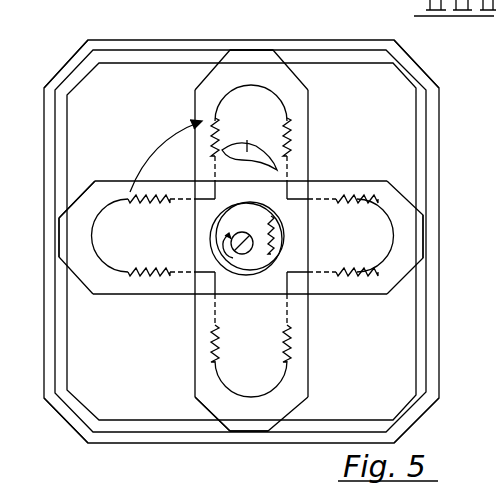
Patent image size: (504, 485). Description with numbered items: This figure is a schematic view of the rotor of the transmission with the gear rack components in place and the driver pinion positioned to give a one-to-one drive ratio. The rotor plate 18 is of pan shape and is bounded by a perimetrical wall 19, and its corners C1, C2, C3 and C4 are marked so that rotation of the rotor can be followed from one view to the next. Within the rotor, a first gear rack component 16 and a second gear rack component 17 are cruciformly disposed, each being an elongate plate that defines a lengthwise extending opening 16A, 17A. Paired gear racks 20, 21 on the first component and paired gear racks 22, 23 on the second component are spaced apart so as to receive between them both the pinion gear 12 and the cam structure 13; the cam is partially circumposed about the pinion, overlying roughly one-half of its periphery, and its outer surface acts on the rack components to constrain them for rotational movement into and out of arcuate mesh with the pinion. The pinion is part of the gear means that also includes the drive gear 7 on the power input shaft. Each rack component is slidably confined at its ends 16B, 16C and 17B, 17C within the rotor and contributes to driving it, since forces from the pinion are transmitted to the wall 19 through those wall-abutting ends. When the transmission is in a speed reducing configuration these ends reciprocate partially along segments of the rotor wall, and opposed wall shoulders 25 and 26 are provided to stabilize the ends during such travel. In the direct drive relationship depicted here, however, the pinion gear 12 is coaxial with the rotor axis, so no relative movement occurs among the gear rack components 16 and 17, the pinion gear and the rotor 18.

The drive gear 7 is at (249, 143).
The pinion gear 12 is at (251, 230).
The cam structure 13 is at (259, 206).
The first gear rack component 16 is at (147, 307).
The lengthwise extending opening 16A is at (116, 228).
The end of first gear rack component 16B is at (59, 232).
The end of first gear rack component 16C is at (423, 247).
The second gear rack component 17 is at (185, 323).
The lengthwise extending opening 17A is at (237, 378).
The end of second gear rack component 17B is at (257, 50).
The end of second gear rack component 17C is at (257, 432).
The rotor plate 18 is at (450, 201).
The perimetrical wall 19 is at (197, 40).
The gear rack 20 is at (153, 204).
The gear rack 21 is at (154, 270).
The gear rack 22 is at (218, 318).
The gear rack 23 is at (284, 326).
The wall shoulder 25 is at (66, 300).
The wall shoulder 26 is at (345, 55).
The rotor corner C1 is at (74, 50).
The rotor corner C2 is at (408, 54).
The rotor corner C3 is at (425, 418).
The rotor corner C4 is at (58, 419).